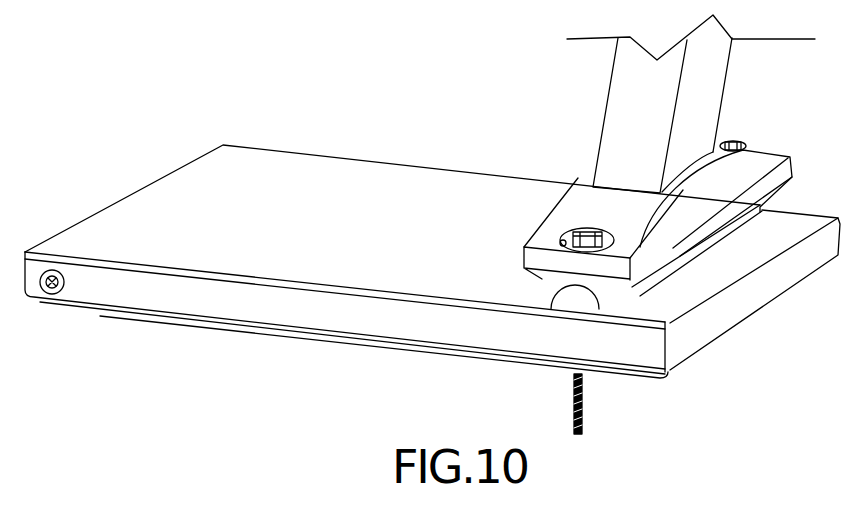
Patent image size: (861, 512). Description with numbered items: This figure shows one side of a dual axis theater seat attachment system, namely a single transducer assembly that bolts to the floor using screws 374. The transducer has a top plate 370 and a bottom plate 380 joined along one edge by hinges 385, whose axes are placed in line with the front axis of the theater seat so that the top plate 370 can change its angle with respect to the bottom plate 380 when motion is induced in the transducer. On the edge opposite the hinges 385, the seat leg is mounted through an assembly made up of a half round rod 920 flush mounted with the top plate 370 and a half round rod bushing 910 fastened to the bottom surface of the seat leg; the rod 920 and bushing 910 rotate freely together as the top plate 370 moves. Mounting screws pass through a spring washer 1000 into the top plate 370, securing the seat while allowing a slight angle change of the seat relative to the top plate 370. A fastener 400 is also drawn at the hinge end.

The top plate 370 is at (333, 183).
The bottom plate 380 is at (240, 328).
The hinge 385 is at (50, 272).
The fastener 400 is at (58, 288).
The half round rod bushing 910 is at (540, 280).
The spring washer 1000 is at (560, 242).
The half round rod 920 is at (575, 303).
The screw 374 is at (590, 402).